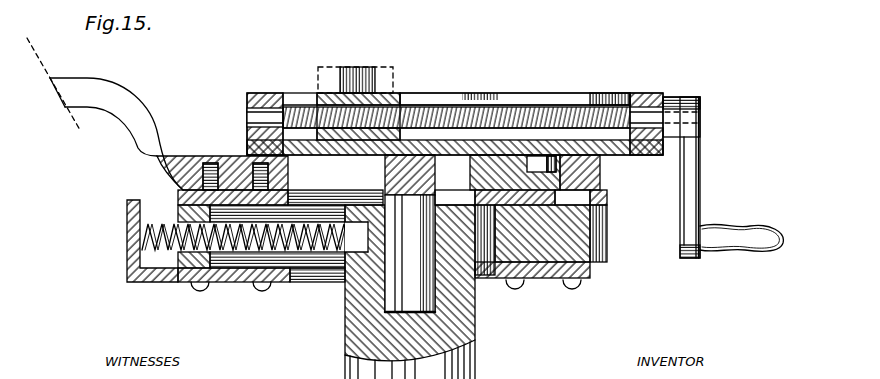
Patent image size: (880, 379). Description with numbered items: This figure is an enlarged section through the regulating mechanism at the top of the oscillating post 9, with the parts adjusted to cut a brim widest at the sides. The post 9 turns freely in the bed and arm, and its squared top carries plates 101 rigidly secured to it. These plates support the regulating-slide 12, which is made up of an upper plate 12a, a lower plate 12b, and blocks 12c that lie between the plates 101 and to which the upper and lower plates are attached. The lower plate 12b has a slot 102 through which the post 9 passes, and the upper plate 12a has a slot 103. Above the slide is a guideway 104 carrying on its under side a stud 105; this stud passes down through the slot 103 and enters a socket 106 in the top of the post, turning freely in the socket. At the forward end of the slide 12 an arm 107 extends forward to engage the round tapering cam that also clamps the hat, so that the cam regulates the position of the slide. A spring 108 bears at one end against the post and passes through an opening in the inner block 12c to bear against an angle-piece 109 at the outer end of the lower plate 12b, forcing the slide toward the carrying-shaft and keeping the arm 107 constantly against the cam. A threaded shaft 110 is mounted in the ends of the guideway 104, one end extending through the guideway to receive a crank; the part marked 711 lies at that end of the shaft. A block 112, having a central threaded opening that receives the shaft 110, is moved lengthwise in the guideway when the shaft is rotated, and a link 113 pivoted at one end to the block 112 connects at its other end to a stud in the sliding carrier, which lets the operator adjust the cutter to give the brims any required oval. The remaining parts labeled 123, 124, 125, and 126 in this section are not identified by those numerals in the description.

The oscillating post 9 is at (410, 359).
The regulating-slide 12 is at (552, 264).
The upper plate 12a is at (492, 197).
The lower plate 12b is at (483, 272).
The blocks 12c is at (207, 270).
The plates 101 is at (600, 220).
The slot 102 is at (326, 272).
The slot 103 is at (345, 200).
The guideway 104 is at (563, 98).
The stud 105 is at (410, 253).
The socket 106 is at (440, 312).
The arm 107 is at (133, 127).
The spring 108 is at (140, 250).
The angle-piece 109 is at (135, 258).
The threaded shaft 110 is at (476, 115).
The block 112 is at (393, 100).
The link 113 is at (328, 80).
The clamp block 123 is at (590, 185).
The clamp plate 124 is at (597, 197).
The bearing block 125 is at (533, 162).
The notch 126 is at (556, 165).
The crank handle 711 is at (697, 182).